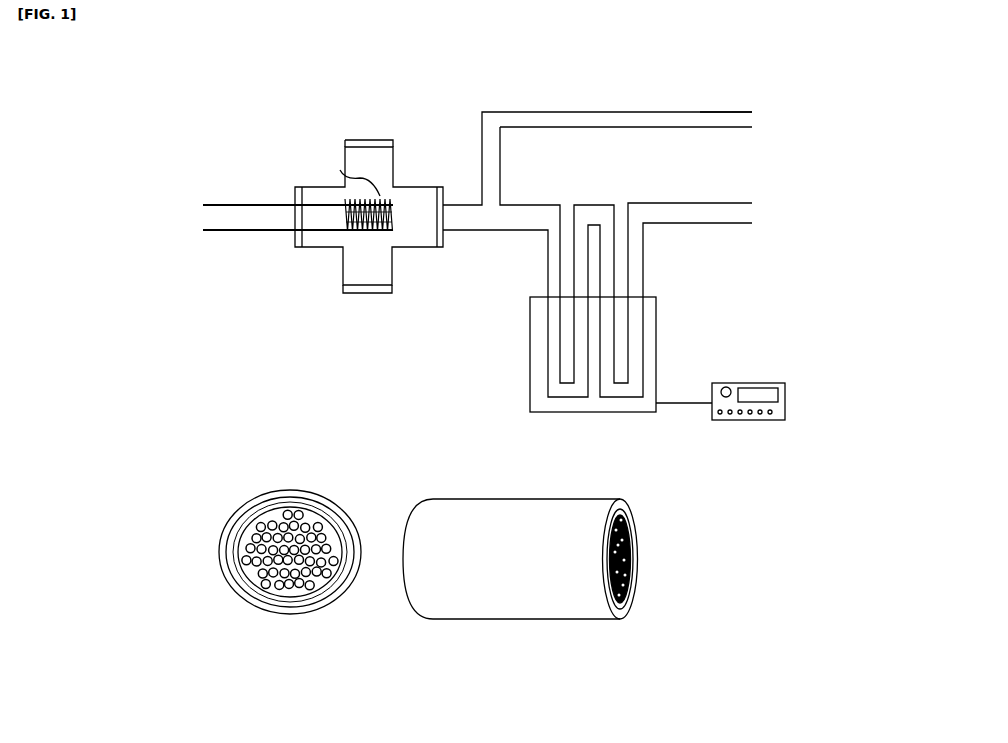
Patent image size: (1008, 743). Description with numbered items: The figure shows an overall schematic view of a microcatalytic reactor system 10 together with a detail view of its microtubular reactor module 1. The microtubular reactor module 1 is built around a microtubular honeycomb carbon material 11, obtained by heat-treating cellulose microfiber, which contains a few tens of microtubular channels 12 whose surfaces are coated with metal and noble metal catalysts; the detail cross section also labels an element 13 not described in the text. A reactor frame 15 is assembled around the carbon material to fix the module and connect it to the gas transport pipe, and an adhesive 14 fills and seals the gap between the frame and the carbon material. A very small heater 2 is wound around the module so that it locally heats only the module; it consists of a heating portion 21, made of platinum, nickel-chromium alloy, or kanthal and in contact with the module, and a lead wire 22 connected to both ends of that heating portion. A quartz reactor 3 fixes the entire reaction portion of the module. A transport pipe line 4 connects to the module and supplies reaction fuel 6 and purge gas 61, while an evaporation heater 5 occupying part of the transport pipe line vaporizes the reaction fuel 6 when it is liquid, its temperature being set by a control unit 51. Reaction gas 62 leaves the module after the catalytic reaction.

The microcatalytic reactor system 10 is at (100, 93).
The microtubular reactor module 1 is at (347, 233).
The microtubular honeycomb carbon material 11 is at (260, 585).
The microtubular channels 12 is at (318, 528).
The intermediate layer 13 is at (300, 510).
The adhesive 14 is at (330, 585).
The reactor frame 15 is at (238, 518).
The very small heater 2 is at (357, 96).
The heating portion 21 is at (388, 197).
The lead wire 22 is at (380, 196).
The quartz reactor 3 is at (320, 187).
The transport pipe line 4 is at (578, 117).
The evaporation heater 5 is at (542, 403).
The control unit 51 is at (785, 410).
The reaction fuel 6 is at (733, 214).
The purge gas 61 is at (733, 120).
The reaction gas 62 is at (220, 217).